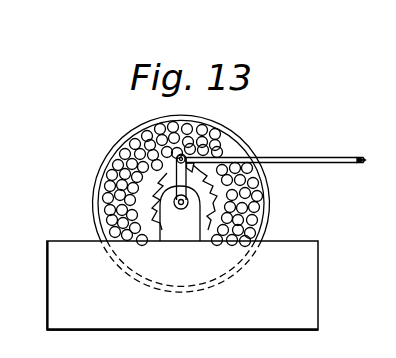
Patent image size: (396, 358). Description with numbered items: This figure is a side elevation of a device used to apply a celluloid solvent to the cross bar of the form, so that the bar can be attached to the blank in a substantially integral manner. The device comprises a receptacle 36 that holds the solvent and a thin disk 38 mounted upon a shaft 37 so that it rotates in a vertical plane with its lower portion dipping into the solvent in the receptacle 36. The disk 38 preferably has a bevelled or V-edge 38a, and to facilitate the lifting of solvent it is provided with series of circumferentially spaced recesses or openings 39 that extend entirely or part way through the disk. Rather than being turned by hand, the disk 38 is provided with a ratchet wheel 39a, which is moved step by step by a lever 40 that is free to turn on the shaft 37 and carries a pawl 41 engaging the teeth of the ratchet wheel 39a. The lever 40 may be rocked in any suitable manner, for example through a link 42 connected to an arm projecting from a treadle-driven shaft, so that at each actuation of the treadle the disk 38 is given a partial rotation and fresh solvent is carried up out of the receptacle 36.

The receptacle 36 is at (298, 291).
The shaft 37 is at (181, 202).
The disk 38 is at (100, 212).
The bevelled or V-edge 38a is at (131, 131).
The recesses or openings 39 is at (107, 185).
The ratchet wheel 39a is at (216, 206).
The lever 40 is at (177, 161).
The pawl 41 is at (193, 164).
The link 42 is at (310, 152).